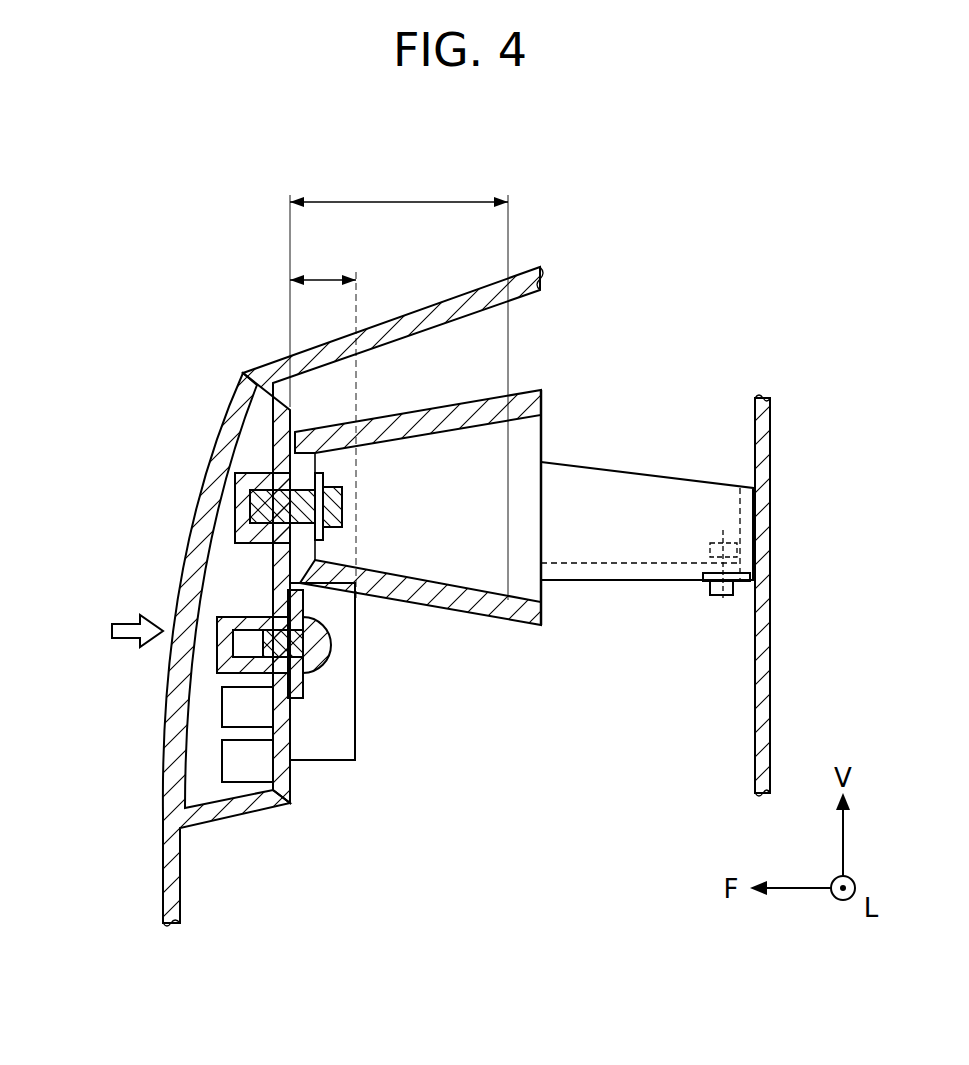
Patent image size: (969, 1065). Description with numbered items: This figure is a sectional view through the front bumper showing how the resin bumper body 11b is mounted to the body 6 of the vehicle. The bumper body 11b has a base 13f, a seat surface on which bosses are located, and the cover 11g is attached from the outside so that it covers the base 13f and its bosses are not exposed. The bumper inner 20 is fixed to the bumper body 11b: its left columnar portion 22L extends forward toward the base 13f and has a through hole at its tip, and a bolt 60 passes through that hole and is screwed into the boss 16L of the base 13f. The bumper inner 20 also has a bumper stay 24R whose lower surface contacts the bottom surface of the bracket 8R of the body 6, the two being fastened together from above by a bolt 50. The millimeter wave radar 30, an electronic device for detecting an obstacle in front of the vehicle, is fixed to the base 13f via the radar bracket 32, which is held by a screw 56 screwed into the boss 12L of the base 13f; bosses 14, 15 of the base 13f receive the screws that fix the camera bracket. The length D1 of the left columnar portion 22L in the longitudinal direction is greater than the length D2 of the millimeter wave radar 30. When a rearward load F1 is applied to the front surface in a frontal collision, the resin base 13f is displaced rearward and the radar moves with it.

The body 6 is at (765, 678).
The bracket 8R is at (770, 523).
The cover 11g is at (182, 593).
The bumper body 11b is at (163, 876).
The boss 12L is at (255, 615).
The base 13f is at (283, 775).
The boss 14 is at (222, 762).
The boss 15 is at (222, 707).
The boss 16L is at (262, 482).
The bumper inner 20 is at (572, 388).
The columnar portion 22L is at (428, 458).
The bumper stay 24R is at (648, 468).
The millimeter wave radar 30 is at (345, 737).
The radar bracket 32 is at (305, 685).
The bolt 50 is at (725, 540).
The screw 56 is at (333, 645).
The bolt 60 is at (345, 510).
The length of the left columnar portion D1 is at (399, 383).
The length of the millimeter wave radar D2 is at (323, 423).
The rearward load F1 is at (110, 631).